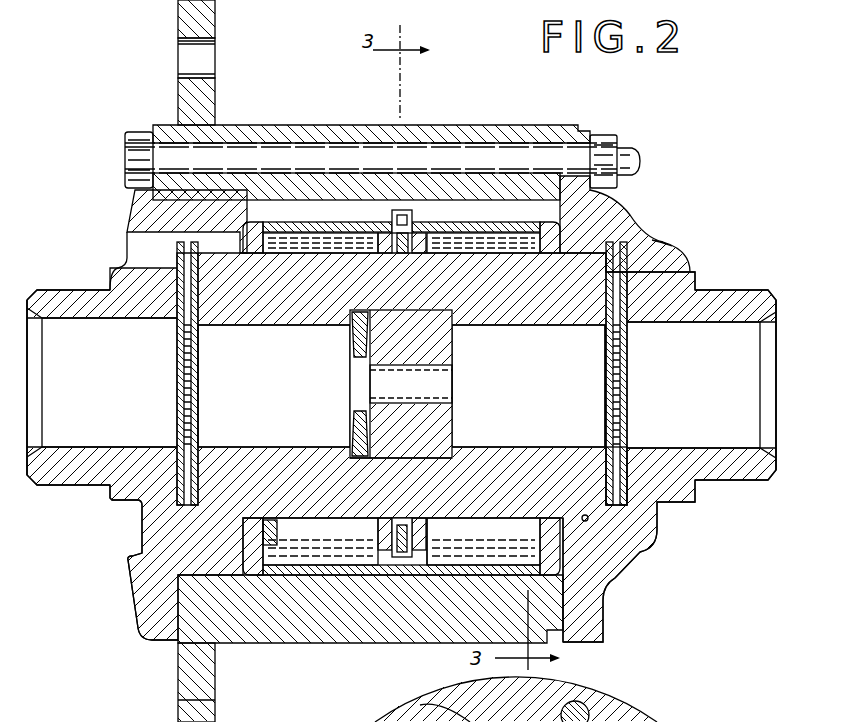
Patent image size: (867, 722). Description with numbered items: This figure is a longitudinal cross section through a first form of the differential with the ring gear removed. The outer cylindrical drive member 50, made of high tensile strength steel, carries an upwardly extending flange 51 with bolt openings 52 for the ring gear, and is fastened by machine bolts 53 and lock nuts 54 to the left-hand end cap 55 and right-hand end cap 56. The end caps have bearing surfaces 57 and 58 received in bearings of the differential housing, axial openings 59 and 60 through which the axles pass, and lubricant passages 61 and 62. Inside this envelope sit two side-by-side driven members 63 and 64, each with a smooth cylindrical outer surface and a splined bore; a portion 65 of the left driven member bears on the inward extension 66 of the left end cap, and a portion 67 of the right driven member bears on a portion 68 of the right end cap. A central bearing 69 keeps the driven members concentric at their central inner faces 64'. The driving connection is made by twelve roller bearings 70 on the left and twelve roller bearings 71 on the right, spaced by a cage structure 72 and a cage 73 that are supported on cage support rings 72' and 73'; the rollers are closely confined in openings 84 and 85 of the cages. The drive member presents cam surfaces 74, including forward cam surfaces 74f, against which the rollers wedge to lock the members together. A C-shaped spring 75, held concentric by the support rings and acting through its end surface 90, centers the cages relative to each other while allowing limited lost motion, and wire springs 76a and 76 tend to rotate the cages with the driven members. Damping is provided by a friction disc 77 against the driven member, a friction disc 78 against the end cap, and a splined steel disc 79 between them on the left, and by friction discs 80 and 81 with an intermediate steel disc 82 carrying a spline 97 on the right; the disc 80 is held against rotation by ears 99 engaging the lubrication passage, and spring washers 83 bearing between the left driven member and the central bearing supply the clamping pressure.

The drive member 50 is at (465, 120).
The upwardly extending flange 51 is at (183, 20).
The bolt openings 52 is at (183, 70).
The machine bolts 53 is at (315, 152).
The lock nuts 54 is at (620, 147).
The left-hand end cap 55 is at (122, 209).
The right-hand end cap 56 is at (643, 212).
The bearing surface 57 is at (62, 290).
The bearing surface 58 is at (745, 290).
The opening 59 is at (100, 318).
The opening 60 is at (715, 322).
The passage 61 is at (127, 258).
The passage 62 is at (690, 270).
The driven member 63 is at (300, 326).
The driven member 64 is at (528, 386).
The central inner faces 64' is at (401, 444).
The portion of outer surface 65 is at (265, 495).
The inward extension 66 is at (150, 560).
The portion of driven member 67 is at (584, 515).
The portion of end cap 68 is at (640, 545).
The central bearing 69 is at (452, 415).
The roller bearings 70 is at (320, 382).
The roller bearings 71 is at (640, 712).
The cage structure 72 is at (327, 260).
The cage support ring 72' is at (369, 391).
The cage 73 is at (476, 258).
The cage support ring 73' is at (430, 391).
The cam surfaces 74 is at (535, 721).
The forward cam surfaces 74f is at (430, 705).
The C-shaped spring 75 is at (402, 558).
The wire spring 76 is at (548, 255).
The wire spring 76a is at (252, 255).
The friction disc 77 is at (196, 410).
The friction disc 78 is at (186, 400).
The steel disc 79 is at (181, 320).
The friction disc 80 is at (628, 348).
The friction disc 81 is at (610, 400).
The steel disc 82 is at (625, 445).
The spring washers 83 is at (355, 412).
The openings 84 is at (276, 531).
The openings 85 is at (439, 541).
The end surface 90 is at (402, 212).
The spline 97 is at (615, 432).
The ears 99 is at (662, 240).